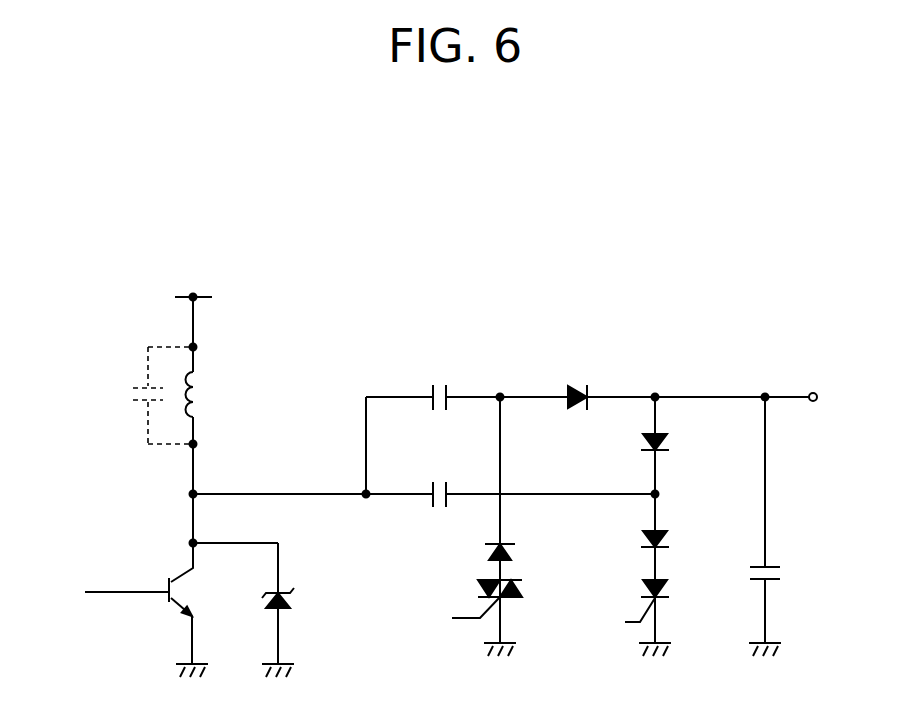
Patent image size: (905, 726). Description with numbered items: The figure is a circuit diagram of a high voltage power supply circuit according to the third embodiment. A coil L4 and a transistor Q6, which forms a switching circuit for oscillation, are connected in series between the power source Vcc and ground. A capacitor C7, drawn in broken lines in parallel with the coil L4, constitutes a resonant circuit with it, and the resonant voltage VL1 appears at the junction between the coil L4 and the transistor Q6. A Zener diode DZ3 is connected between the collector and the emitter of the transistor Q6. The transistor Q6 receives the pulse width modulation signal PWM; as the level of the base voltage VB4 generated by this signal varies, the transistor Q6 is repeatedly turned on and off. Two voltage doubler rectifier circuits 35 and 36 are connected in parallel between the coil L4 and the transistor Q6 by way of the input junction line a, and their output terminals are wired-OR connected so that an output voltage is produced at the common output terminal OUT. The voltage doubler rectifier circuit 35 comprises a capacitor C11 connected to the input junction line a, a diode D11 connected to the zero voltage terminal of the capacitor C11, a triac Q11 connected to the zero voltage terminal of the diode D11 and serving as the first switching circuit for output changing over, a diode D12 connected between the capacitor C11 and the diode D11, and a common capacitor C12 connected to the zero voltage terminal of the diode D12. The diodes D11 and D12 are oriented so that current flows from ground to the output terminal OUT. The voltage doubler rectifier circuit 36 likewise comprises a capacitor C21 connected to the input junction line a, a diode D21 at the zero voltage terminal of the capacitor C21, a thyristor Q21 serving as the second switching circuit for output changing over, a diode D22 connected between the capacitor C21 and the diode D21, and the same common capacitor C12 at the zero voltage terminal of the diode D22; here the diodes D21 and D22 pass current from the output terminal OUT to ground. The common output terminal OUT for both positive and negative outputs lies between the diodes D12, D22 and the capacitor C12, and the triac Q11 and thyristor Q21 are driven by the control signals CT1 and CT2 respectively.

The power source Vcc is at (219, 296).
The coil L4 is at (196, 392).
The capacitor C7 is at (129, 395).
The resonant voltage VL1 is at (279, 474).
The input junction line a is at (327, 492).
The capacitor C11 is at (433, 385).
The capacitor C21 is at (433, 478).
The diode D12 is at (581, 388).
The diode D22 is at (668, 445).
The diode D11 is at (511, 550).
The triac Q11 is at (522, 590).
The control signal CT1 is at (451, 612).
The diode D21 is at (668, 540).
The thyristor Q21 is at (668, 595).
The control signal CT2 is at (612, 618).
The common capacitor C12 is at (780, 573).
The common output terminal OUT is at (822, 399).
The transistor Q6 is at (179, 591).
The pulse width modulation signal PWM is at (93, 592).
The base voltage VB4 is at (126, 569).
The Zener diode DZ3 is at (291, 596).
The voltage doubler rectifier circuit 35 is at (523, 423).
The voltage doubler rectifier circuit 36 is at (708, 508).